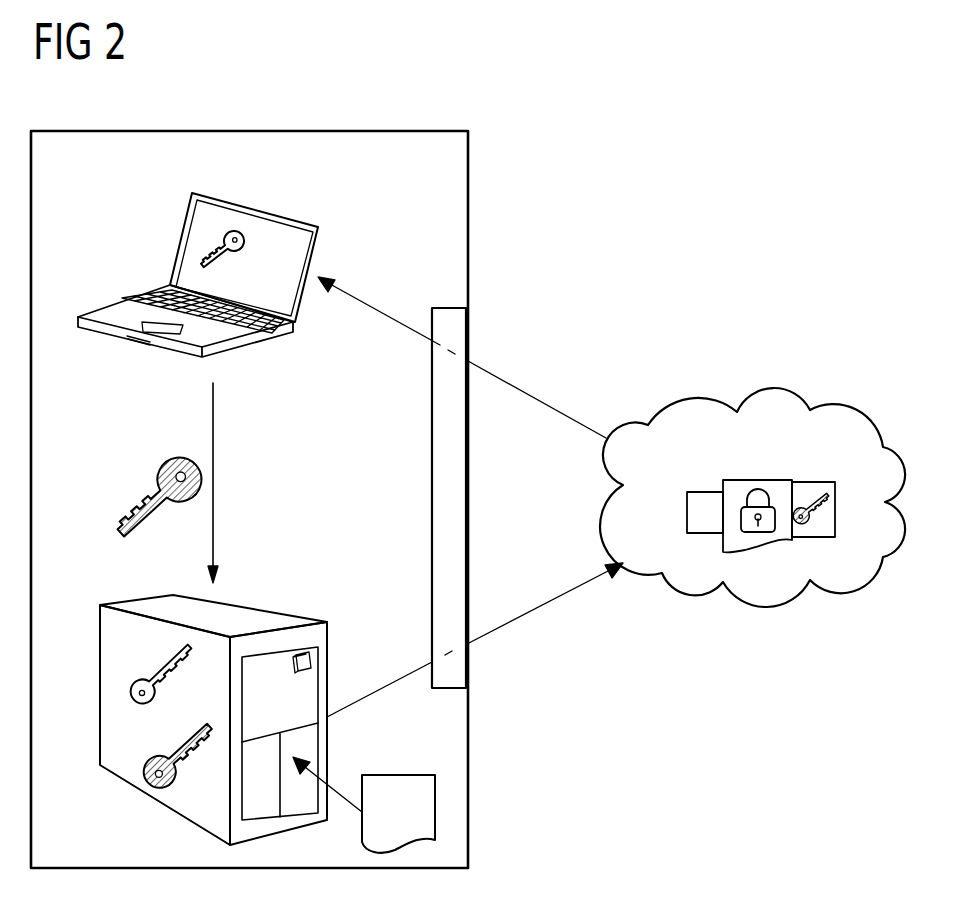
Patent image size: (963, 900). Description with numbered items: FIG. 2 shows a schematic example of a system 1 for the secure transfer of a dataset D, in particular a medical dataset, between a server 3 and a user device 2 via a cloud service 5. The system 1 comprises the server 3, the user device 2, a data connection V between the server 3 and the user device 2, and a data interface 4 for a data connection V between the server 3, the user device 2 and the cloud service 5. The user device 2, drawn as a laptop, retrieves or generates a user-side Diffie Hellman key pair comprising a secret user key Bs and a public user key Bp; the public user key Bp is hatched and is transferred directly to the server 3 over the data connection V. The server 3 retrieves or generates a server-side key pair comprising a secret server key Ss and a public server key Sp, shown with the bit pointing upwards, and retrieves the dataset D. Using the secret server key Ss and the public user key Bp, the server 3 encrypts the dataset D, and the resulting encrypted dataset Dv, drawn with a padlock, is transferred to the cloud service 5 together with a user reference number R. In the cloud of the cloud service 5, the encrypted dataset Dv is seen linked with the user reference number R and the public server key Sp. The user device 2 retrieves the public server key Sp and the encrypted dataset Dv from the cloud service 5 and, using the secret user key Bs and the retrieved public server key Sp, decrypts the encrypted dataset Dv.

The system 1 is at (468, 180).
The user device 2 is at (277, 215).
The server 3 is at (258, 609).
The data interface 4 is at (432, 500).
The cloud service 5 is at (772, 388).
The secret user key Bs is at (215, 240).
The public user key Bp is at (160, 462).
The secret server key Ss is at (135, 680).
The public server key Sp is at (150, 762).
The data connection V is at (222, 485).
The dataset D is at (398, 775).
The user reference number R is at (705, 492).
The encrypted dataset Dv is at (764, 480).